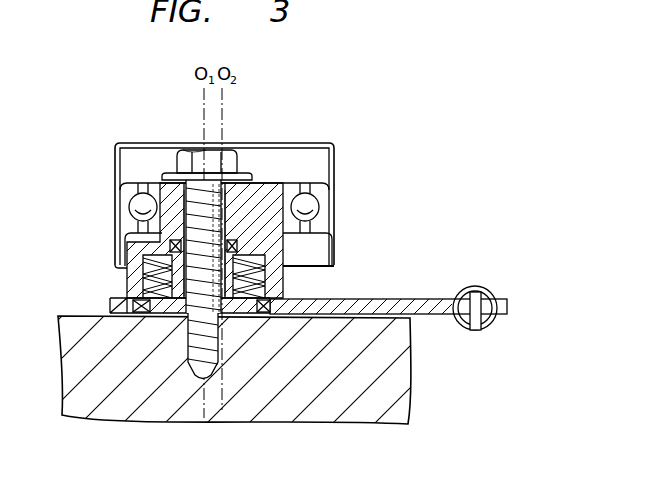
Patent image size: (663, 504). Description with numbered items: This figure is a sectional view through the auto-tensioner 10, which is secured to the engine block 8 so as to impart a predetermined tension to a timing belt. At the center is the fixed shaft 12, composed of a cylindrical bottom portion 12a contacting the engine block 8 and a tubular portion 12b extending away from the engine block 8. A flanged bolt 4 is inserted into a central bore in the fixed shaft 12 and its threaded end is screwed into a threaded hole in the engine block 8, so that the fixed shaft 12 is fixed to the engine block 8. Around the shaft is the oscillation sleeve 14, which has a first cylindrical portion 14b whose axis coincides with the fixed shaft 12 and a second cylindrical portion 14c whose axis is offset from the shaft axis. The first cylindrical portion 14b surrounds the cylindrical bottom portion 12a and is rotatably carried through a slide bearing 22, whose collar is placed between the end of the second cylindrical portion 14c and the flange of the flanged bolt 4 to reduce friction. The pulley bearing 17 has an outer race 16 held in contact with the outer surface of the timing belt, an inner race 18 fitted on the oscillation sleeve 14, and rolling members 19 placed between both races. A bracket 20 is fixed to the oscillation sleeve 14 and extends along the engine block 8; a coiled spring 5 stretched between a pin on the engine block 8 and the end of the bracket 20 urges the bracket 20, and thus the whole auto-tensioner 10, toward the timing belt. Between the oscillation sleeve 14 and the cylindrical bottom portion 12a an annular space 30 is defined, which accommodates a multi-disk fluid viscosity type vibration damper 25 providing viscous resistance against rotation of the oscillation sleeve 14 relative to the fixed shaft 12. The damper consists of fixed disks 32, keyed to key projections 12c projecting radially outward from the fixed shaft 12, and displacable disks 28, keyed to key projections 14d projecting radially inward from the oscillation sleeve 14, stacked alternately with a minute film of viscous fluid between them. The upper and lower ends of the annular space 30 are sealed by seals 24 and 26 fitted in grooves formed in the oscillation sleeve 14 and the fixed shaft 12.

The flanged bolt 4 is at (229, 156).
The coiled spring 5 is at (483, 290).
The engine block 8 is at (398, 408).
The auto-tensioner 10 is at (380, 152).
The fixed shaft 12 is at (210, 244).
The cylindrical bottom portion 12a is at (240, 310).
The tubular portion 12b is at (181, 183).
The key projections 12c is at (268, 266).
The oscillation sleeve 14 is at (206, 205).
The first cylindrical portion 14b is at (127, 247).
The second cylindrical portion 14c is at (133, 203).
The key projections 14d is at (113, 286).
The outer race 16 is at (333, 147).
The pulley bearing 17 is at (331, 271).
The inner race 18 is at (290, 228).
The rolling members 19 is at (318, 201).
The bracket 20 is at (390, 292).
The slide bearing 22 is at (243, 172).
The seal 24 is at (243, 198).
The vibration damper 25 is at (93, 284).
The seal 26 is at (262, 318).
The displacable disks 28 is at (127, 227).
The annular space 30 is at (135, 317).
The fixed disks 32 is at (132, 268).